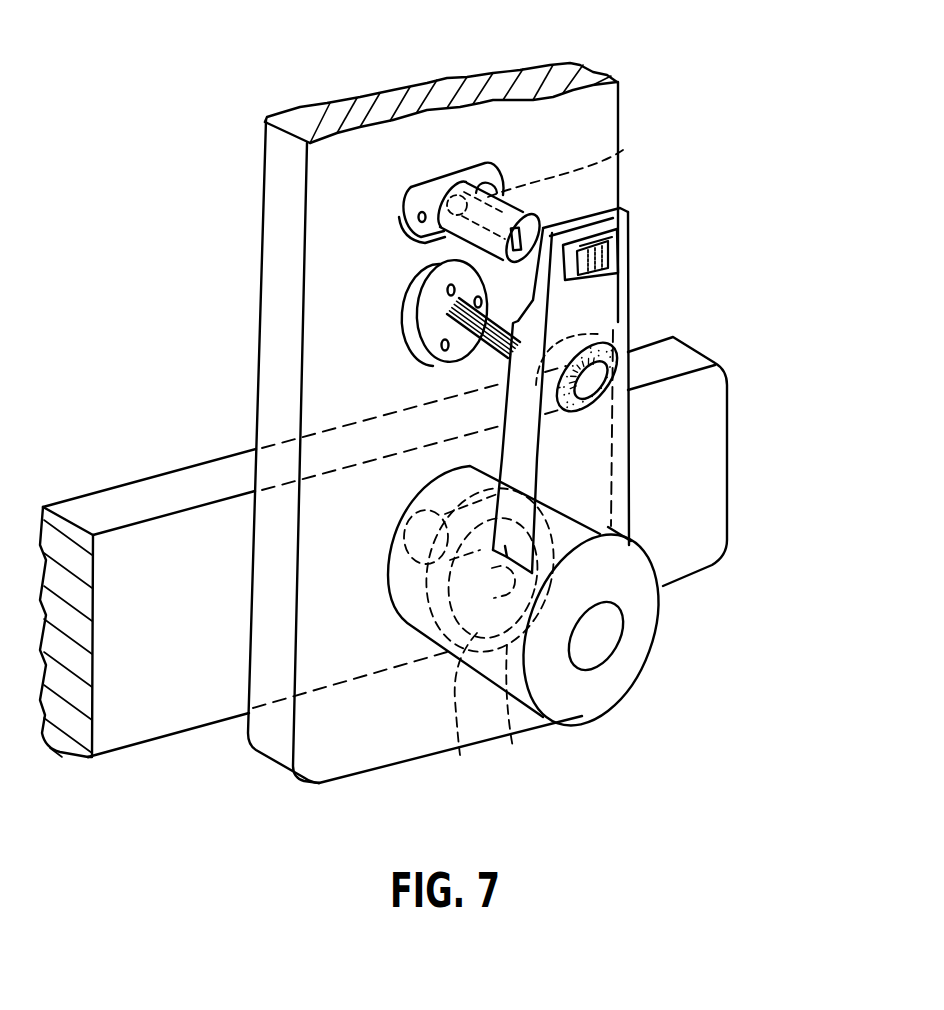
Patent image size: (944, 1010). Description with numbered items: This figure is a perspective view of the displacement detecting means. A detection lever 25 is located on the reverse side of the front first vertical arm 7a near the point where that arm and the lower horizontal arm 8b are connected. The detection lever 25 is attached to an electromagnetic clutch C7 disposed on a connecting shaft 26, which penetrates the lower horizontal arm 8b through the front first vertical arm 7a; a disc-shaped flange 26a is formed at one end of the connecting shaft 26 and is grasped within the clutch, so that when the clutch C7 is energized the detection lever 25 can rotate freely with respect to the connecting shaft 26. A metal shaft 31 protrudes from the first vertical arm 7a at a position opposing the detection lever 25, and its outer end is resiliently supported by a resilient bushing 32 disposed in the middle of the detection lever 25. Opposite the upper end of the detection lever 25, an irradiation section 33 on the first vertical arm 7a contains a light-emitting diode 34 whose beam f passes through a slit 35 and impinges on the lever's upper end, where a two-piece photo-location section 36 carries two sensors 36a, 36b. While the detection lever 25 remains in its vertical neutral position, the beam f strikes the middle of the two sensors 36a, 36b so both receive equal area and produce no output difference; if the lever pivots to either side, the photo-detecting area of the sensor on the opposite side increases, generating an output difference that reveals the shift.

The front first vertical arm 7a is at (268, 218).
The lower horizontal arm 8b is at (132, 502).
The detection lever 25 is at (630, 427).
The connecting shaft 26 is at (400, 561).
The disc-shaped flange 26a is at (514, 746).
The metal shaft 31 is at (463, 368).
The resilient bushing 32 is at (607, 345).
The irradiation section 33 is at (481, 192).
The light-emitting diode 34 is at (460, 195).
The slit 35 is at (524, 206).
The photo-location section 36 is at (628, 227).
The sensor 36a is at (578, 284).
The sensor 36b is at (613, 255).
The beam f is at (626, 147).
The electromagnetic clutch C7 is at (455, 757).